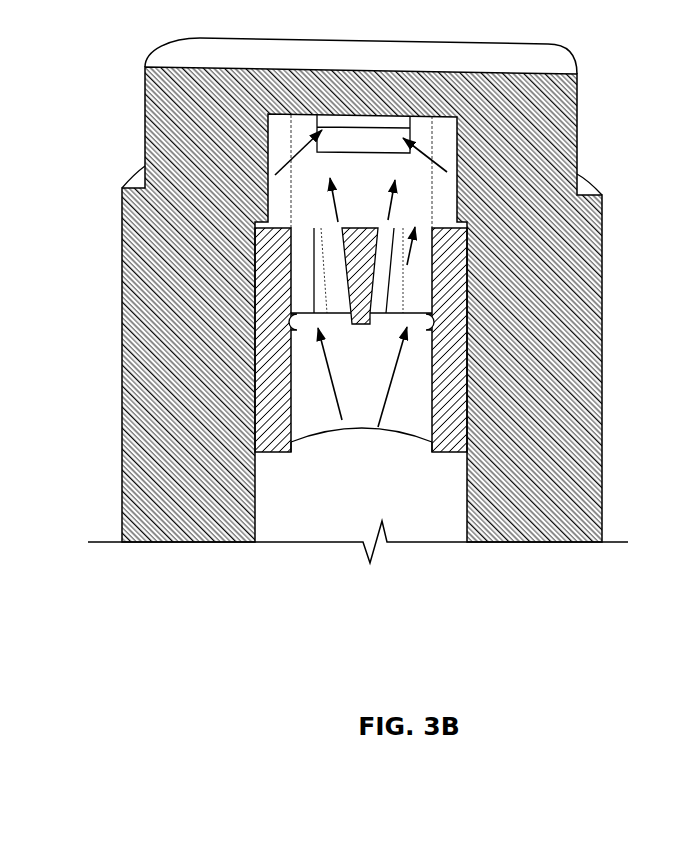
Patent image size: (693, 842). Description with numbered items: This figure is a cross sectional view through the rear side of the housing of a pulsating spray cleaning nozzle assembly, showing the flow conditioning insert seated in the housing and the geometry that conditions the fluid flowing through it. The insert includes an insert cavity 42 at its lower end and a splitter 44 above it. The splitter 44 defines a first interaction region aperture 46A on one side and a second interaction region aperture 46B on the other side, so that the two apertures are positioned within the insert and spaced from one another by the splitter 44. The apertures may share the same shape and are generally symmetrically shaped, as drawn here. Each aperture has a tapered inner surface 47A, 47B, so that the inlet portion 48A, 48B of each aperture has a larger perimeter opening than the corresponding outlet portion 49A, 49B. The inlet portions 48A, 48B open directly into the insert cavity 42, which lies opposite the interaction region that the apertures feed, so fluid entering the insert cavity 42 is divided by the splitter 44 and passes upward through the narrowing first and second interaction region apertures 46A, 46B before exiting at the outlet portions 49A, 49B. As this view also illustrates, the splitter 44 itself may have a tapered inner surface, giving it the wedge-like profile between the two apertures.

The insert cavity 42 is at (312, 388).
The splitter 44 is at (363, 323).
The first interaction region aperture 46A is at (318, 250).
The second interaction region aperture 46B is at (408, 287).
The tapered inner surface 47A is at (291, 302).
The tapered inner surface 47B is at (432, 279).
The inlet portion 48A is at (297, 327).
The inlet portion 48B is at (427, 326).
The outlet portion 49A is at (257, 221).
The outlet portion 49B is at (455, 224).